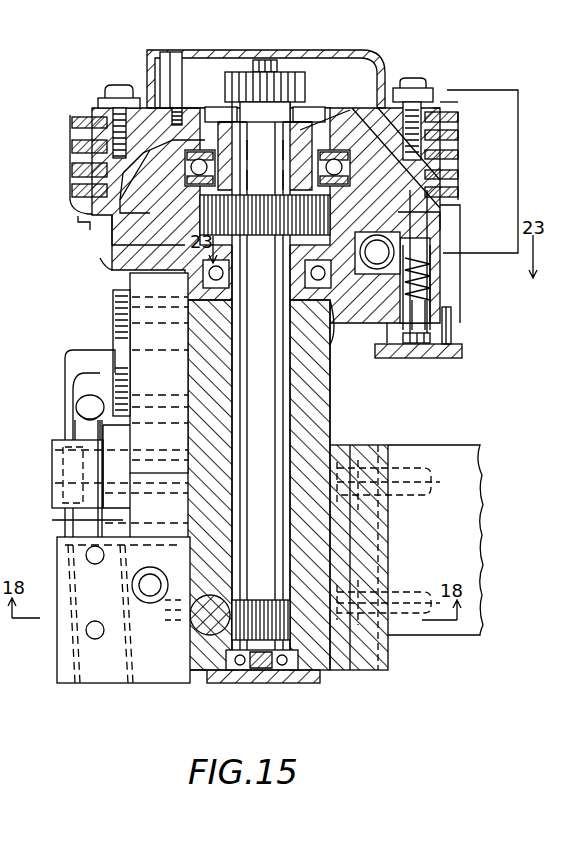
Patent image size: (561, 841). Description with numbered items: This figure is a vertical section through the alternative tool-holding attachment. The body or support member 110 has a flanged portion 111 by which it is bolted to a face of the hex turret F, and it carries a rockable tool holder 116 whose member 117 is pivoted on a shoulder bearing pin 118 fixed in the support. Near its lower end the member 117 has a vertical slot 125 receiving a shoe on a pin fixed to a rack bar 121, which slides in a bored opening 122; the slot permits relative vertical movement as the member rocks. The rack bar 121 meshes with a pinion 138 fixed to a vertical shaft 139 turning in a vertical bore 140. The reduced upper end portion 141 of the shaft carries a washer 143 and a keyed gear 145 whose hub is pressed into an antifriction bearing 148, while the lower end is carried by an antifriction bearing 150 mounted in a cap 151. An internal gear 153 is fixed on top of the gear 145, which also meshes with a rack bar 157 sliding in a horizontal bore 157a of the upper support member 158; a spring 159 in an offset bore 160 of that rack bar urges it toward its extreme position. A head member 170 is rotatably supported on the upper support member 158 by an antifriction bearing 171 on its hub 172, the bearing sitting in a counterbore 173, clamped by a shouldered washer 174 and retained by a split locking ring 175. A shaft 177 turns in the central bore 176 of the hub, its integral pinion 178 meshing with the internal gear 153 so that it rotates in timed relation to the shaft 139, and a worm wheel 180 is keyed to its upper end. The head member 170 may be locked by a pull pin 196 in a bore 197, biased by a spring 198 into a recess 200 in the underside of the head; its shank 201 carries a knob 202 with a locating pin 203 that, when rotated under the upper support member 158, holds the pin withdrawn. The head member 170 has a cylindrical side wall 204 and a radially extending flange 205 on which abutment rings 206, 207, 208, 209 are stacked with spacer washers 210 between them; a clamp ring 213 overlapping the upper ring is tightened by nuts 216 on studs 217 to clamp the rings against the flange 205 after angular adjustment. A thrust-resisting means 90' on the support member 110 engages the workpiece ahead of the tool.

The spacer washer 210 is at (95, 128).
The abutment ring 206 is at (70, 130).
The abutment ring 207 is at (70, 152).
The abutment ring 208 is at (70, 170).
The abutment ring 209 is at (70, 190).
The radially extending flange 205 is at (72, 205).
The head member 170 is at (212, 92).
The worm wheel 180 is at (300, 90).
The hub 172 is at (308, 128).
The nut 216 is at (430, 60).
The clamp ring 213 is at (436, 100).
The stud 217 is at (440, 124).
The cylindrical side wall 204 is at (456, 134).
The pull pin 196 is at (452, 200).
The horizontal bore 157a is at (442, 218).
The bore 160 is at (395, 242).
The spring 159 is at (515, 248).
The bore 197 is at (445, 272).
The rack bar 157 is at (440, 290).
The spring 198 is at (446, 304).
The shank 201 is at (448, 330).
The locating pin 203 is at (456, 336).
The knob 202 is at (440, 362).
The antifriction bearing 171 is at (150, 187).
The internal gear 153 is at (180, 232).
The upper support member 158 is at (106, 258).
The shaft 177 is at (265, 131).
The central bore 176 is at (265, 151).
The shouldered washer 174 is at (265, 175).
The counterbore 173 is at (341, 176).
The recess 200 is at (332, 200).
The split locking ring 175 is at (396, 157).
The pinion 178 is at (267, 261).
The upper end portion 141 is at (261, 272).
The gear 145 is at (188, 292).
The washer 143 is at (218, 302).
The shoulder bearing pin 118 is at (113, 330).
The antifriction bearing 148 is at (330, 336).
The vertical shaft 139 is at (280, 362).
The vertical bore 140 is at (290, 388).
The support member 110 is at (320, 428).
The flanged portion 111 is at (370, 448).
The hex turret F is at (464, 440).
The thrust-resisting means 90' is at (53, 480).
The bored opening 122 is at (180, 565).
The rockable tool holder 116 is at (115, 692).
The vertical slot 125 is at (130, 705).
The member 117 is at (160, 683).
The cap 151 is at (212, 683).
The rack bar 121 is at (220, 683).
The antifriction bearing 150 is at (274, 685).
The pinion 138 is at (292, 628).